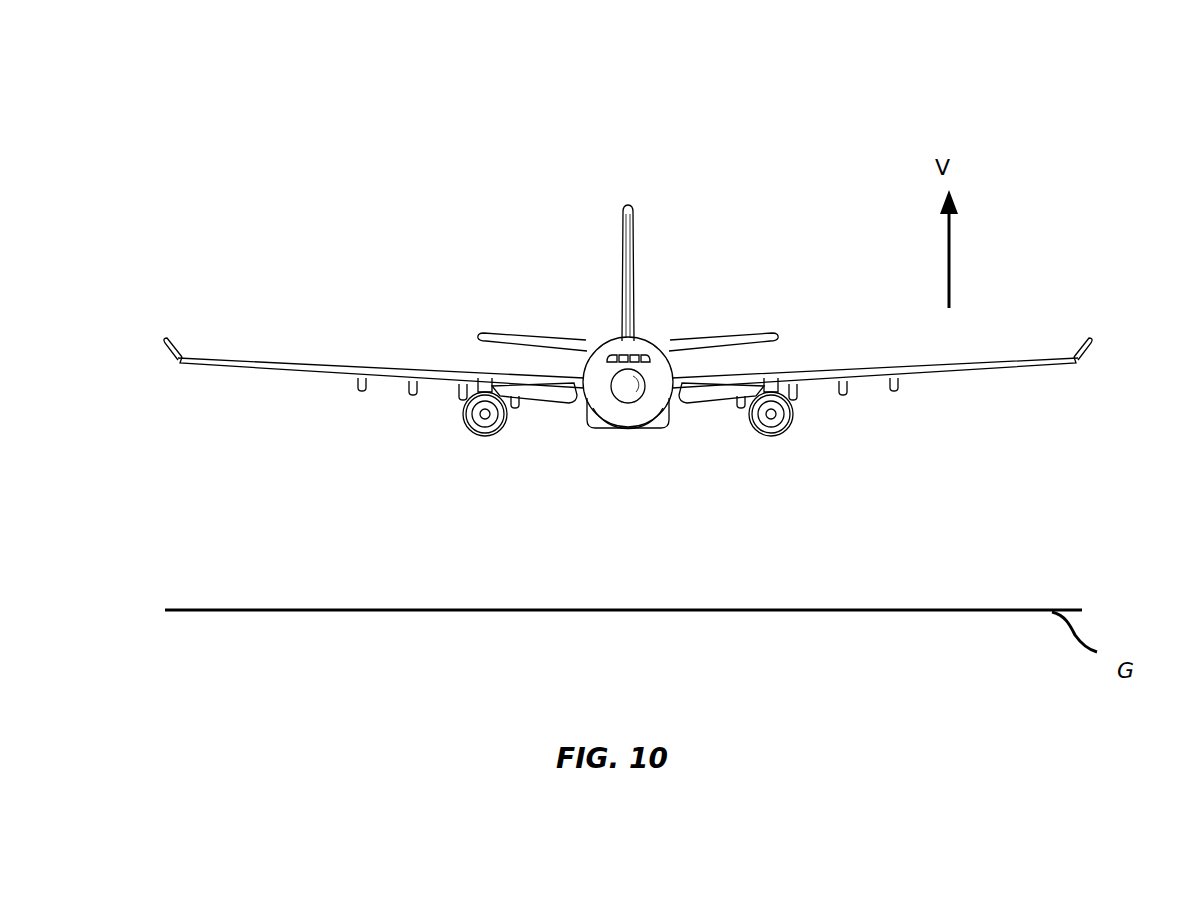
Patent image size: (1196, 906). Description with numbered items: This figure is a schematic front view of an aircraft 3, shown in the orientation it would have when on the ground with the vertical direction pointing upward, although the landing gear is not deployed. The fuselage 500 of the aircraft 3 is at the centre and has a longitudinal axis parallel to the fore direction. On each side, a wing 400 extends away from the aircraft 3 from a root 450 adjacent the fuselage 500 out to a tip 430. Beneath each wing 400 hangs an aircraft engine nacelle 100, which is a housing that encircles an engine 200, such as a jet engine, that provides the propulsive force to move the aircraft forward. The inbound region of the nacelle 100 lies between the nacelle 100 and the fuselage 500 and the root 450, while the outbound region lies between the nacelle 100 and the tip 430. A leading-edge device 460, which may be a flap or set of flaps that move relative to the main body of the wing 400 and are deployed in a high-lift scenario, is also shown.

The aircraft 3 is at (256, 143).
The aircraft engine nacelle 100 is at (792, 413).
The engine 200 is at (480, 415).
The wing 400 is at (299, 418).
The tip 430 is at (1087, 350).
The root 450 is at (991, 417).
The leading-edge device 460 is at (450, 378).
The fuselage 500 is at (612, 340).